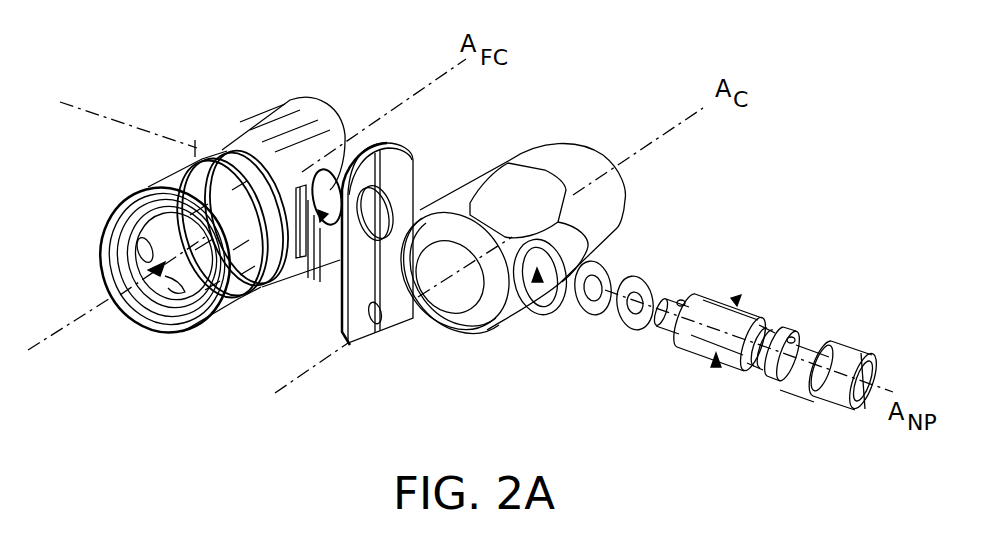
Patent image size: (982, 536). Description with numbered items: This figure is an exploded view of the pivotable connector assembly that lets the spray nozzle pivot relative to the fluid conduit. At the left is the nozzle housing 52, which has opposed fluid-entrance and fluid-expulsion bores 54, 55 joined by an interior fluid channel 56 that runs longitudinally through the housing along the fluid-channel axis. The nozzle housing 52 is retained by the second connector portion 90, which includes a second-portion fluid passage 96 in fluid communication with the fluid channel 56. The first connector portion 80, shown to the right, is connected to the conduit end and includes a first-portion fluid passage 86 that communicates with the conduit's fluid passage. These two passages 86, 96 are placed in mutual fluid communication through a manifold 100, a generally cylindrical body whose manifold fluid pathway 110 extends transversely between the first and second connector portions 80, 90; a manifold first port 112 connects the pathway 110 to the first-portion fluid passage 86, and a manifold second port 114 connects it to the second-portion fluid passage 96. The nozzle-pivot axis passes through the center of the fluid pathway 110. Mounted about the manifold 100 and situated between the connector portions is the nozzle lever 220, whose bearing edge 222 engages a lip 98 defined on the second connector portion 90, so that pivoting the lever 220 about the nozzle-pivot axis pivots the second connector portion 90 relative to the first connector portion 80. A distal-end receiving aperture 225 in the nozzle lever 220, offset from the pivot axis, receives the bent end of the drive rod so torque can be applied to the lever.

The nozzle housing 52 is at (150, 192).
The fluid-entrance bore 54 is at (195, 142).
The fluid-expulsion bore 55 is at (130, 262).
The interior fluid channel 56 is at (150, 272).
The first connector portion 80 is at (612, 202).
The first-portion fluid passage 86 is at (537, 280).
The second connector portion 90 is at (243, 126).
The second-portion fluid passage 96 is at (338, 265).
The lip 98 is at (323, 213).
The manifold 100 is at (716, 366).
The manifold fluid pathway 110 is at (735, 296).
The manifold first port 112 is at (792, 338).
The manifold second port 114 is at (679, 300).
The nozzle lever 220 is at (387, 263).
The bearing edge 222 is at (340, 300).
The distal-end receiving aperture 225 is at (374, 322).